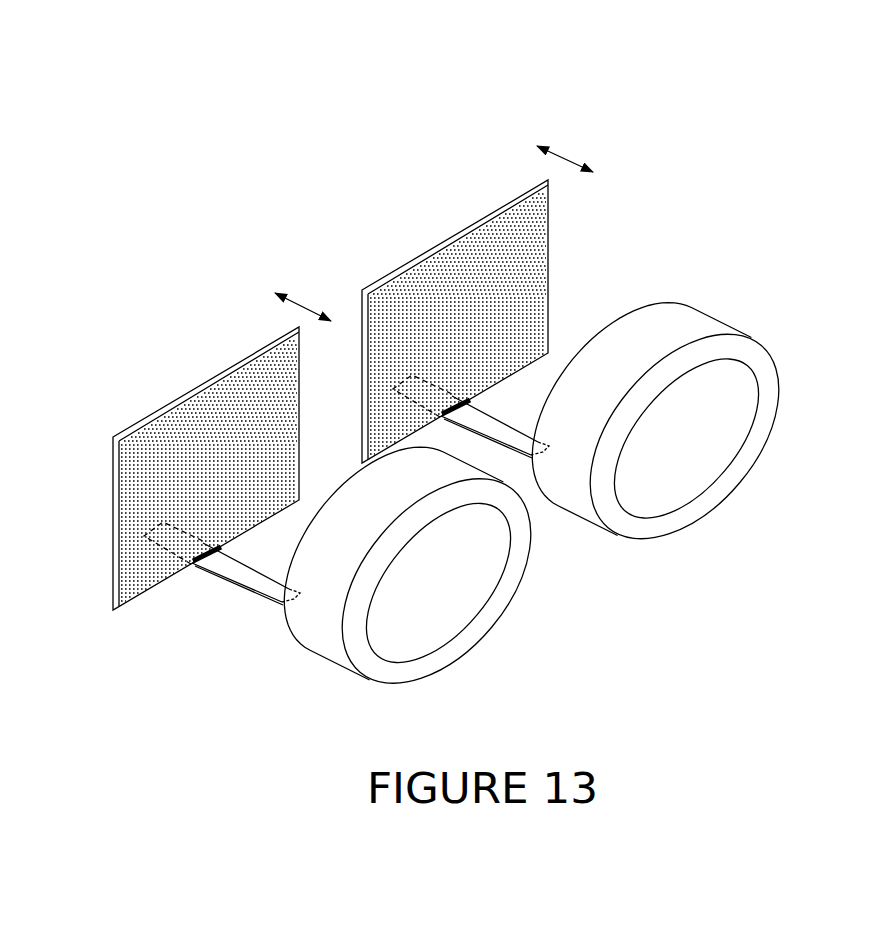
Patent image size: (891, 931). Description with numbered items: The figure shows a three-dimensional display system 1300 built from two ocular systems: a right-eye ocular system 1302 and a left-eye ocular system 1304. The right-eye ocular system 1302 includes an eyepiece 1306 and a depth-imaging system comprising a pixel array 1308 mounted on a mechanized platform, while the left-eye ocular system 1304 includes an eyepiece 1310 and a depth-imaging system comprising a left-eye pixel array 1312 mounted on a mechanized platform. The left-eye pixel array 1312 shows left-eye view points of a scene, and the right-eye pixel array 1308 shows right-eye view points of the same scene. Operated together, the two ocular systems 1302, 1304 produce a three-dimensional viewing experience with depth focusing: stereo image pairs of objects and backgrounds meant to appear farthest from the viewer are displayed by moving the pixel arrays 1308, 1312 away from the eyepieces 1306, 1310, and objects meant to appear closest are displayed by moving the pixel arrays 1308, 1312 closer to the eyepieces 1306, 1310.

The binocular display system 1300 is at (147, 188).
The right-eye ocular system 1302 is at (650, 114).
The left-eye ocular system 1304 is at (164, 752).
The eyepiece 1306 is at (712, 324).
The pixel array 1308 is at (497, 212).
The eyepiece 1310 is at (327, 648).
The left-eye pixel array 1312 is at (215, 380).